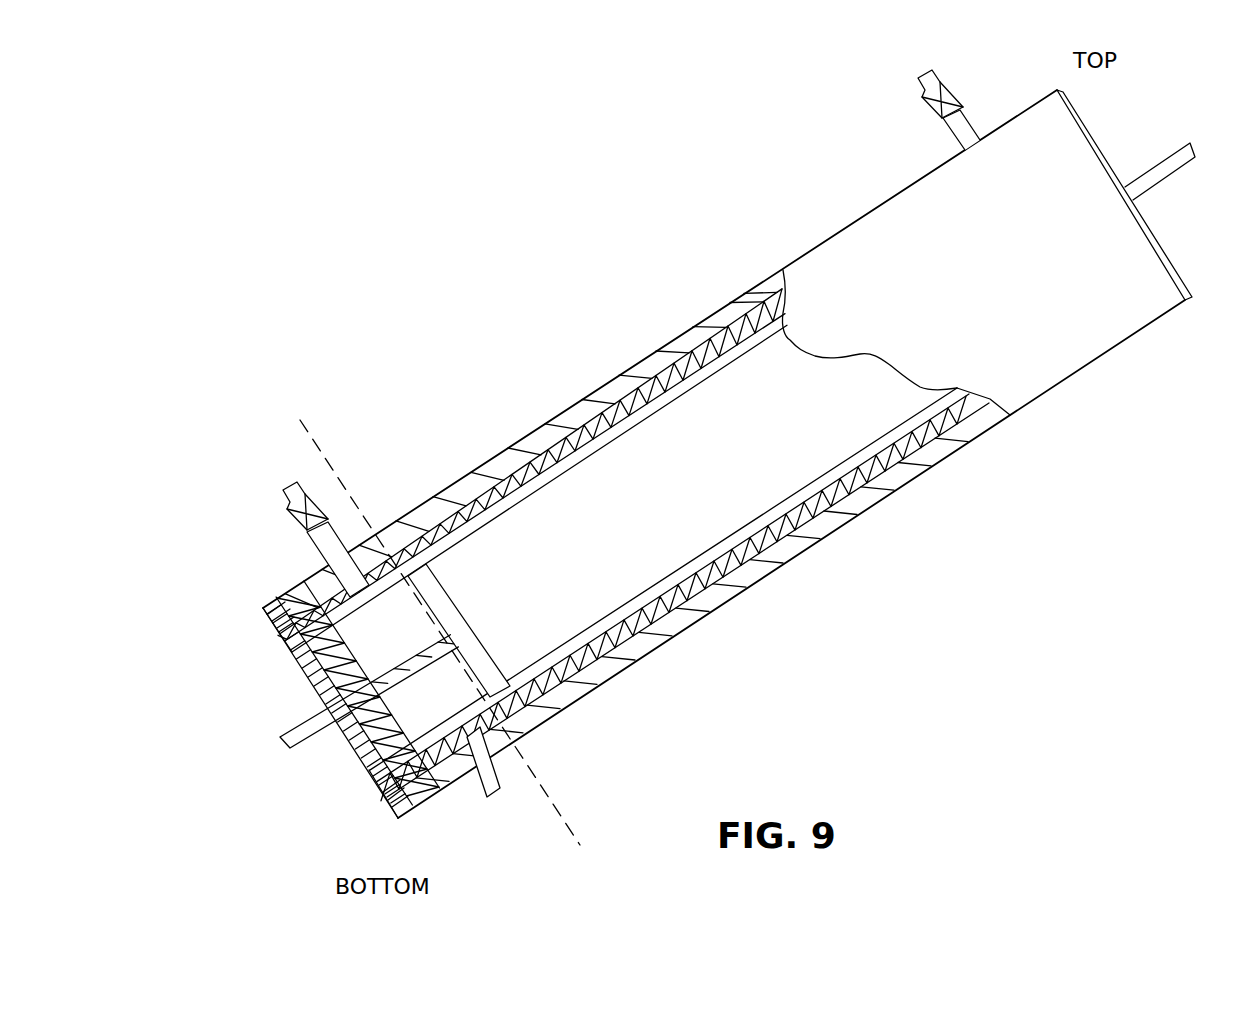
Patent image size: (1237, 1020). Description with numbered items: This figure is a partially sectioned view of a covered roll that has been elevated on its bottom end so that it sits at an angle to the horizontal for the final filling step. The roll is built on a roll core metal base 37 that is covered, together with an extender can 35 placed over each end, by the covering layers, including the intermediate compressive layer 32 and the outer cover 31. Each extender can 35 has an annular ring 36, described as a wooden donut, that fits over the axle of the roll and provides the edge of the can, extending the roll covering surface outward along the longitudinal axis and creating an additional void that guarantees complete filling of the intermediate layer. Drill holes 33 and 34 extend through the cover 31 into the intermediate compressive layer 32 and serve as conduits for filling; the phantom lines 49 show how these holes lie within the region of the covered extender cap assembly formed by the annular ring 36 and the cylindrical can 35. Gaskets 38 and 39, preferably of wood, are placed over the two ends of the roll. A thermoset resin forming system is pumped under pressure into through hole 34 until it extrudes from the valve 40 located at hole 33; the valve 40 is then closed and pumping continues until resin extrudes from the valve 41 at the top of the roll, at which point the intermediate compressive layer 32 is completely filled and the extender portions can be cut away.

The cover 31 is at (733, 300).
The intermediate compressive layer 32 is at (783, 317).
The drill hole 33 is at (323, 555).
The through hole 34 is at (497, 793).
The extender can 35 is at (282, 645).
The annular ring 36 is at (313, 703).
The roll core metal base 37 is at (753, 353).
The gasket 38 is at (313, 675).
The gasket 39 is at (1158, 232).
The valve 40 is at (287, 492).
The valve 41 is at (963, 82).
The phantom lines 49 is at (424, 616).